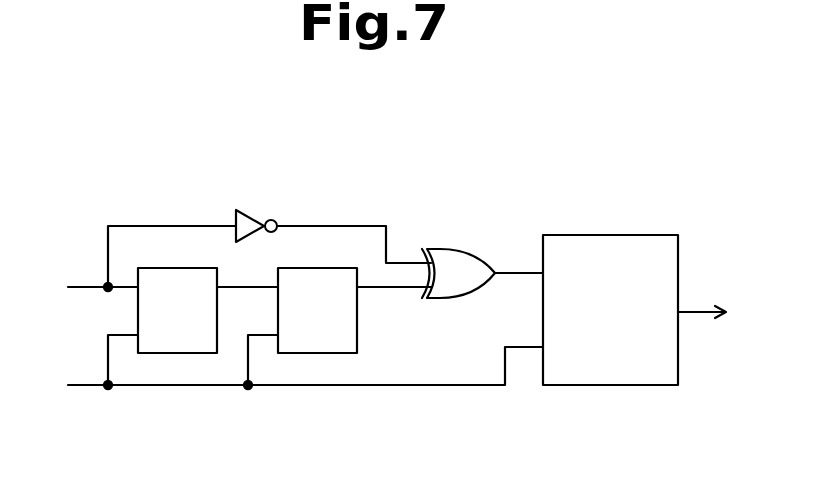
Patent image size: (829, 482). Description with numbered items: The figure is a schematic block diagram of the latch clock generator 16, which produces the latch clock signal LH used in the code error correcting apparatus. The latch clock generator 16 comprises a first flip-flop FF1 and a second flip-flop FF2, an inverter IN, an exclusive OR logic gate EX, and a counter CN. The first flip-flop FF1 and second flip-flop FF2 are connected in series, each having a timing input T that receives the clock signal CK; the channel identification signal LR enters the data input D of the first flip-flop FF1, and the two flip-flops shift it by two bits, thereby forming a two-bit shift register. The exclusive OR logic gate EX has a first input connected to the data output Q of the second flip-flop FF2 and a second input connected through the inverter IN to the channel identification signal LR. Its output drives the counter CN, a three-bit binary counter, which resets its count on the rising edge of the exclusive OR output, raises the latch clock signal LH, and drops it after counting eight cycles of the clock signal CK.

The latch clock generator 16 is at (369, 165).
The inverter IN is at (248, 213).
The first flip-flop FF1 is at (180, 355).
The second flip-flop FF2 is at (316, 355).
The exclusive OR logic gate EX is at (468, 248).
The counter CN is at (592, 235).